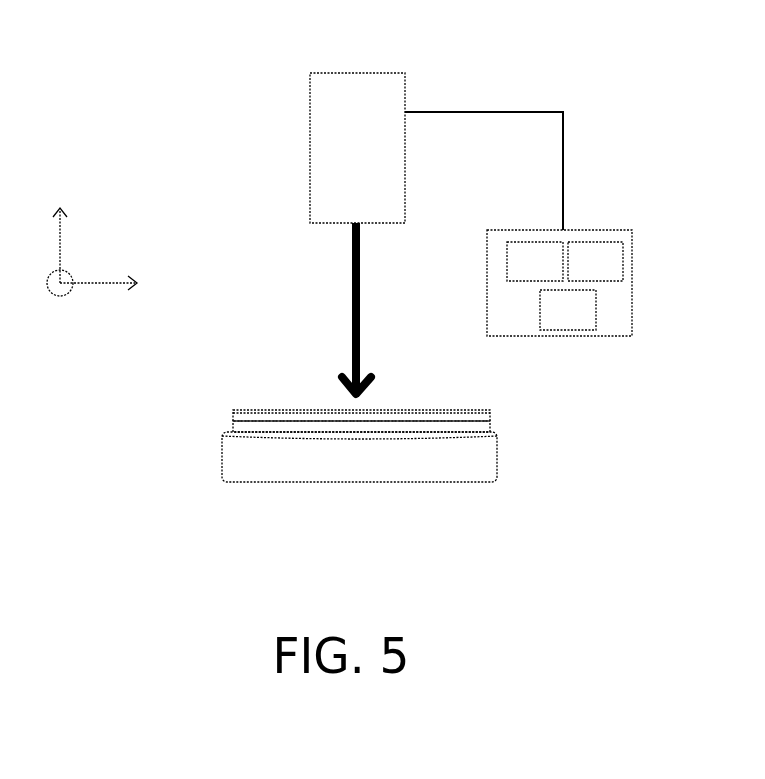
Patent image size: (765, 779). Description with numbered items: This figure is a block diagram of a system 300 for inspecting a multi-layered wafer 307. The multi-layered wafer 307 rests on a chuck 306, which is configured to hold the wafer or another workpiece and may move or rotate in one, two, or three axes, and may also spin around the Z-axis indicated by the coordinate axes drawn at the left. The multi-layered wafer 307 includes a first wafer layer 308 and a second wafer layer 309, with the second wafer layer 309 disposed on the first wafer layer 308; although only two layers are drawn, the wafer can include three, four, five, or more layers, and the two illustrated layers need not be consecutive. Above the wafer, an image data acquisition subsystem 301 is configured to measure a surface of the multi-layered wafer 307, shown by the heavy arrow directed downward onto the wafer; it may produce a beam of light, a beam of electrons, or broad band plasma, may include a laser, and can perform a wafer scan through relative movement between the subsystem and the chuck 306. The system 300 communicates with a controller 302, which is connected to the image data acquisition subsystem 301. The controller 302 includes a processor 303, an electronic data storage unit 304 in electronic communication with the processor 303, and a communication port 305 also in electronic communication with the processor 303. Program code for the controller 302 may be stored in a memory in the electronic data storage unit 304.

The system 300 is at (200, 96).
The image data acquisition subsystem 301 is at (357, 148).
The controller 302 is at (591, 235).
The processor 303 is at (535, 261).
The electronic data storage unit 304 is at (595, 261).
The communication port 305 is at (568, 310).
The chuck 306 is at (267, 483).
The multi-layered wafer 307 is at (262, 393).
The first wafer layer 308 is at (490, 428).
The second wafer layer 309 is at (490, 415).